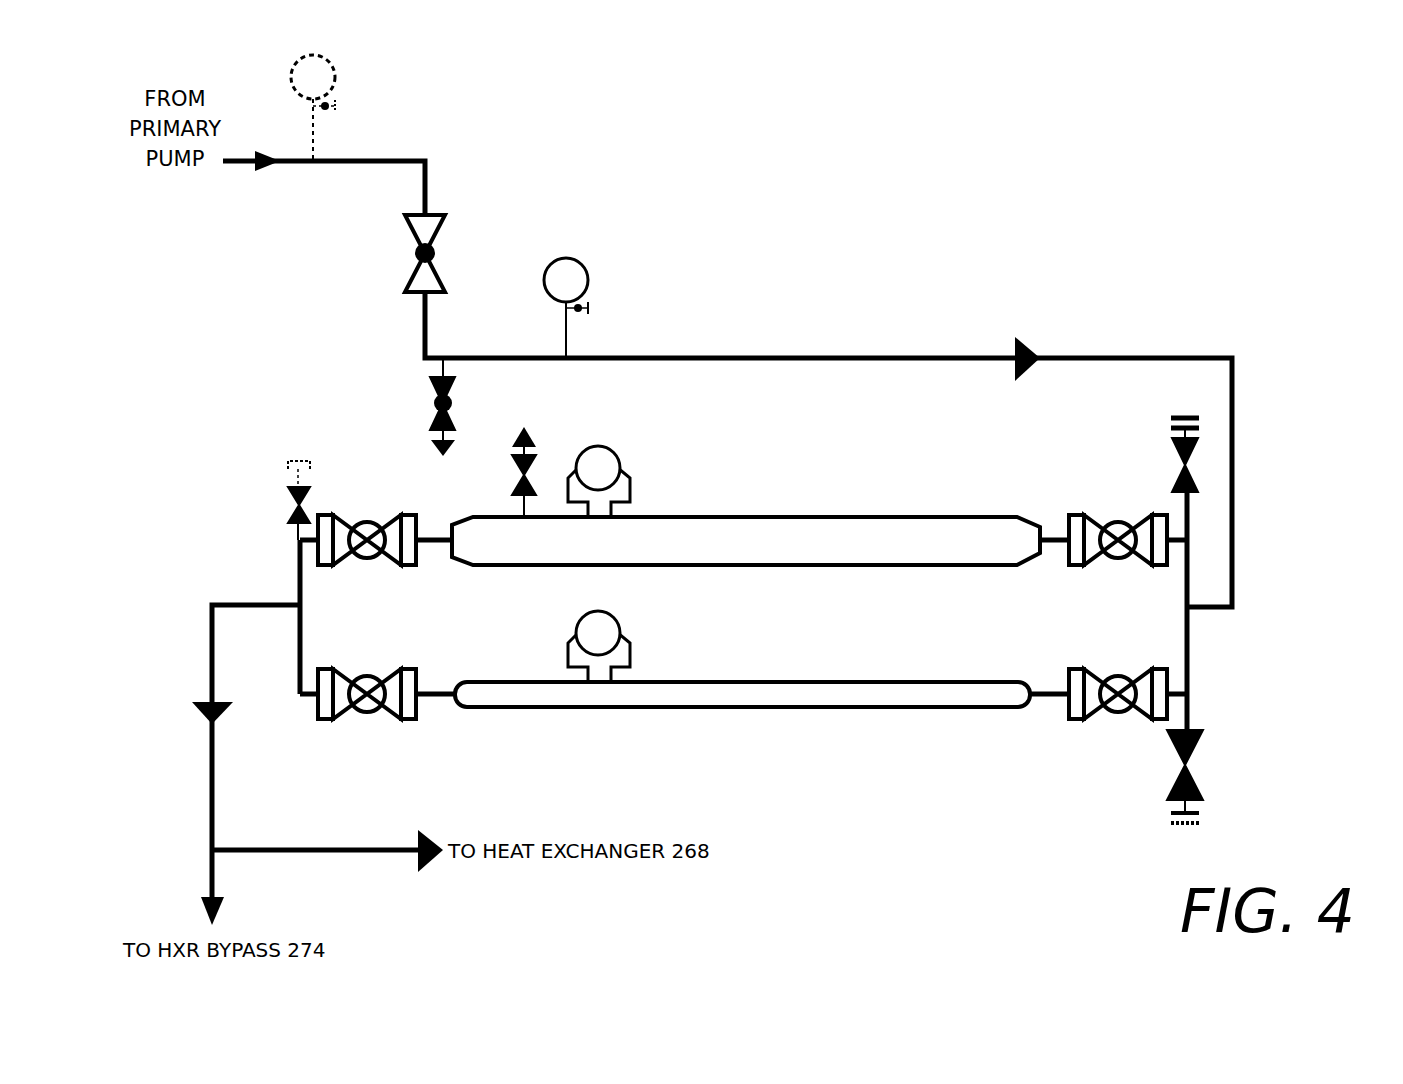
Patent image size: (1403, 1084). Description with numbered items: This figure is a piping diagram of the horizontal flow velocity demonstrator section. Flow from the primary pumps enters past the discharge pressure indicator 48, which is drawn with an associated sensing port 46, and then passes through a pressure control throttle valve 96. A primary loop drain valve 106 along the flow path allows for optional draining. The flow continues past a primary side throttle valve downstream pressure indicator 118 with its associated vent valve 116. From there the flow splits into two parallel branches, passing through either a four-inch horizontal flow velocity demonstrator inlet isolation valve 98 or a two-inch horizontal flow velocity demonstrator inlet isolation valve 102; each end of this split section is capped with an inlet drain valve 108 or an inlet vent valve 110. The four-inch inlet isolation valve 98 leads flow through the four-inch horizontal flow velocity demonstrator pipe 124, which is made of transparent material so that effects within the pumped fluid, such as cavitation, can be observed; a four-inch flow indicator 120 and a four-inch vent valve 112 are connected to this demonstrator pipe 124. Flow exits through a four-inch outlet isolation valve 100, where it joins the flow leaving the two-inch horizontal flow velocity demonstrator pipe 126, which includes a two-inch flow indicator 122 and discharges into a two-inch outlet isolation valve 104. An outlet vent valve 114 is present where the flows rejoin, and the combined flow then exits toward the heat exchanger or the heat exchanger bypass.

The discharge pressure indicator 48 is at (347, 68).
The pressure sensing port 46 is at (348, 108).
The pressure control throttle valve 96 is at (390, 255).
The primary side throttle valve downstream pressure indicator 118 is at (597, 268).
The vent valve 116 is at (600, 312).
The primary loop drain valve 106 is at (425, 398).
The 4" vent valve 112 is at (540, 470).
The outlet vent valve 114 is at (290, 507).
The 4" flow indicator 120 is at (640, 447).
The 2" flow indicator 122 is at (630, 627).
The 4" horizontal flow velocity demonstrator pipe 124 is at (831, 505).
The 2" horizontal flow velocity demonstrator pipe 126 is at (843, 722).
The 4" outlet isolation valve 100 is at (373, 568).
The 2" outlet isolation valve 104 is at (380, 728).
The 4" horizontal flow velocity demonstrator inlet isolation valve 98 is at (1095, 505).
The 2" horizontal flow velocity demonstrator inlet isolation valve 102 is at (1115, 660).
The inlet vent valve 110 is at (1172, 465).
The inlet drain valve 108 is at (1205, 763).